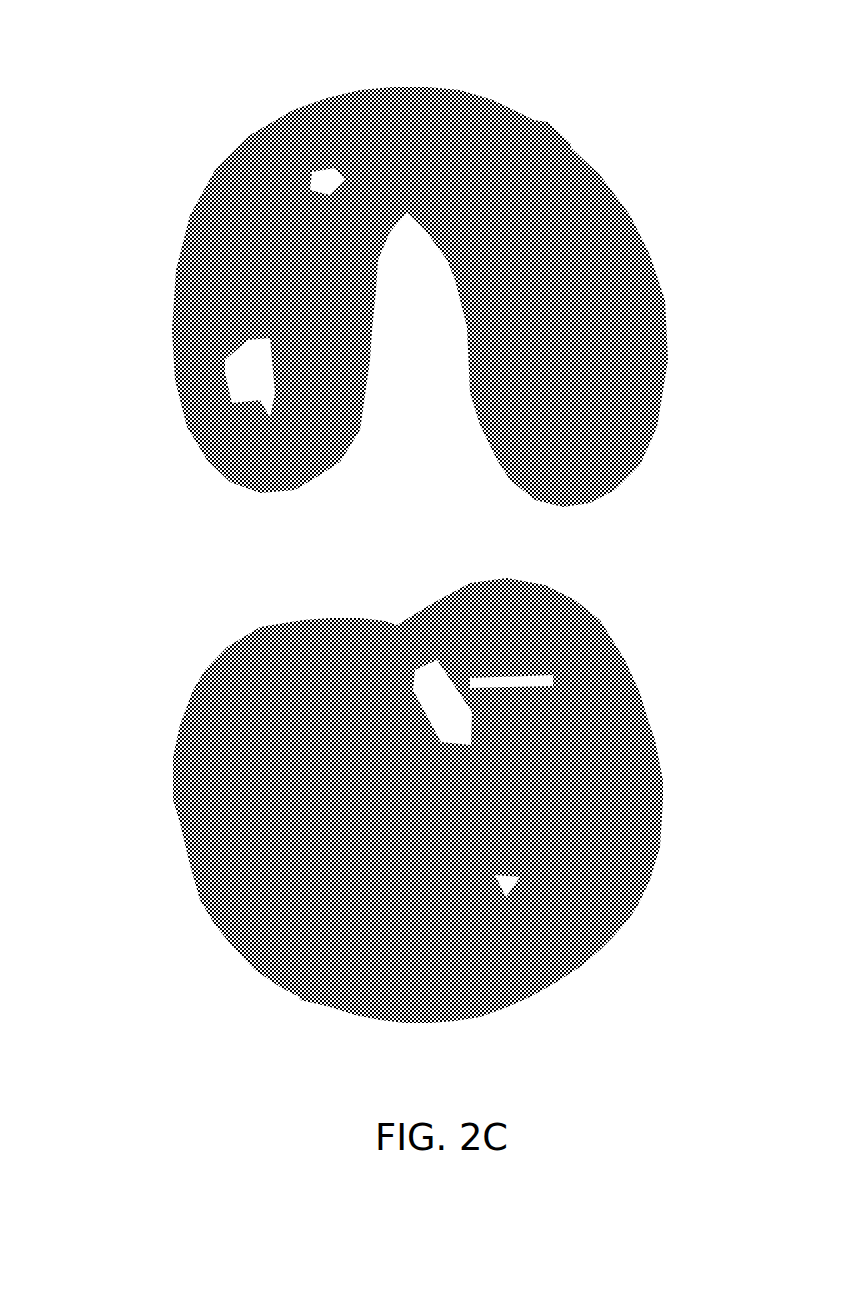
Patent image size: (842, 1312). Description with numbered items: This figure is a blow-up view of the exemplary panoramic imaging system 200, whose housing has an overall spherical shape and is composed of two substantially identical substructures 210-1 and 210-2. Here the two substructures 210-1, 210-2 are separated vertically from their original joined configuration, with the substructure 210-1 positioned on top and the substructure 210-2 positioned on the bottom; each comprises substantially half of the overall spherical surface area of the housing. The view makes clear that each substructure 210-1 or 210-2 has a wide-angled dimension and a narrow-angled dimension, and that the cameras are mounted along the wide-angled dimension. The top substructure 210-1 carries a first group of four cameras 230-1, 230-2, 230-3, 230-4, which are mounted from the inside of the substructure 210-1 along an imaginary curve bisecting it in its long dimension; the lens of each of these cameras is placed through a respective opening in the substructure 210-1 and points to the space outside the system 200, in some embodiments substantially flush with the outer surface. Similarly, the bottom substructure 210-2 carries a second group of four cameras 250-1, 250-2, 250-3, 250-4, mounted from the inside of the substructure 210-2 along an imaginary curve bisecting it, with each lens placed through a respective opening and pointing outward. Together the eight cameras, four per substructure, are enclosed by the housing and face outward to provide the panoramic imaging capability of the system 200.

The panoramic imaging system 200 is at (457, 38).
The substructure 210-1 is at (628, 230).
The substructure 210-2 is at (210, 773).
The camera 230-1 is at (612, 385).
The camera 230-2 is at (548, 147).
The camera 230-3 is at (313, 187).
The camera 230-4 is at (223, 373).
The camera 250-1 is at (277, 712).
The camera 250-2 is at (313, 997).
The camera 250-3 is at (512, 890).
The camera 250-4 is at (557, 690).